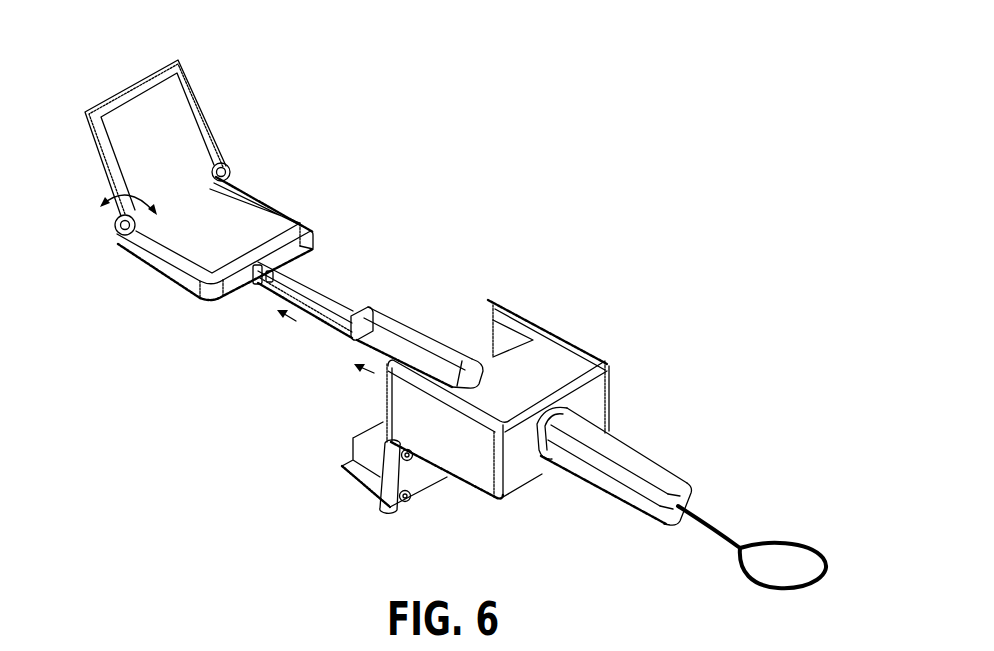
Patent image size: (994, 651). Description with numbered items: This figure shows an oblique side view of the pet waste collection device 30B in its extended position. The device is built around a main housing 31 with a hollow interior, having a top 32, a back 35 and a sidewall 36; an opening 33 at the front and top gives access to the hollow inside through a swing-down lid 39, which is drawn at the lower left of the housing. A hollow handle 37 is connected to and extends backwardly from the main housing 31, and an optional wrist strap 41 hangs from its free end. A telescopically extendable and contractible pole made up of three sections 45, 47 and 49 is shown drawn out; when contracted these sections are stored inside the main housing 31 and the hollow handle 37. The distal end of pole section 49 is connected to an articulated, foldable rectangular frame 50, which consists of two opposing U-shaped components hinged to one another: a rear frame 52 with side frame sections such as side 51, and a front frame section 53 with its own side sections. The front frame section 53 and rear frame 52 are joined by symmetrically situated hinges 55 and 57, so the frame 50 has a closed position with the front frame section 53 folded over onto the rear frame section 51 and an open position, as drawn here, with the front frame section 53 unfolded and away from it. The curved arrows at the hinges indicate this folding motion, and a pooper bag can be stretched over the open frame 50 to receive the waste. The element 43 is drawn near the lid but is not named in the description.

The pet waste collection device 30B is at (649, 347).
The main housing 31 is at (507, 396).
The top 32 is at (573, 363).
The opening 33 is at (490, 301).
The back 35 is at (587, 400).
The sidewall 36 is at (486, 473).
The hollow handle 37 is at (643, 453).
The swing-down lid 39 is at (420, 480).
The wrist strap 41 is at (772, 541).
The mounting bracket 43 is at (377, 428).
The pole section 45 is at (480, 362).
The pole section 47 is at (375, 335).
The pole section 49 is at (322, 282).
The frame 50 is at (172, 284).
The side frame section 51 is at (268, 199).
The rear frame 52 is at (294, 250).
The front frame section 53 is at (102, 162).
The hinge 55 is at (114, 226).
The hinge 57 is at (218, 165).